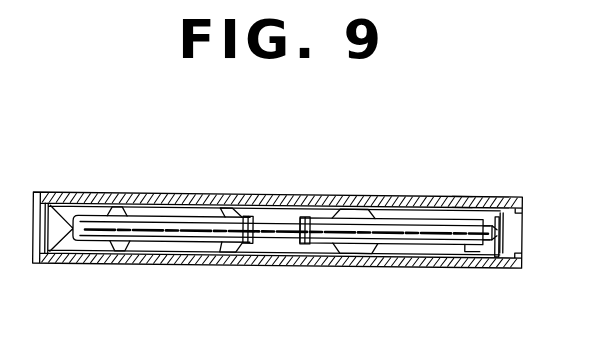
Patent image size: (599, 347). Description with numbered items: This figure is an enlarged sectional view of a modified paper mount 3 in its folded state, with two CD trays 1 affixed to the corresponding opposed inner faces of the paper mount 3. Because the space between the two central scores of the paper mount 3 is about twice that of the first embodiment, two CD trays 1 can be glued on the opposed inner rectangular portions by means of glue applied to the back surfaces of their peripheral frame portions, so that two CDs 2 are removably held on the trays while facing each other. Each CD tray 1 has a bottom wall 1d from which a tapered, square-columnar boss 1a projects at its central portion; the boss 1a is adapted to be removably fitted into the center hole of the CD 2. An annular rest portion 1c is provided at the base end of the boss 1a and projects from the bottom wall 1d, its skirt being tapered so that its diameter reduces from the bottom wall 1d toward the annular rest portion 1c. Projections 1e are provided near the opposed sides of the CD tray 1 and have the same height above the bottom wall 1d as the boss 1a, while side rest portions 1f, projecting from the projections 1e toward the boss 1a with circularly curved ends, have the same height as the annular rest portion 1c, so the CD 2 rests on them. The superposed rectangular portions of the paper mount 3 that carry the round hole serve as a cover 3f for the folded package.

The CD tray 1 is at (84, 197).
The boss 1a is at (262, 198).
The annular rest portion 1c is at (233, 200).
The bottom wall 1d is at (175, 252).
The projection 1e is at (503, 236).
The side rest portion 1f is at (470, 250).
The CD 2 is at (357, 195).
The paper mount 3 is at (400, 190).
The cover 3f is at (458, 191).